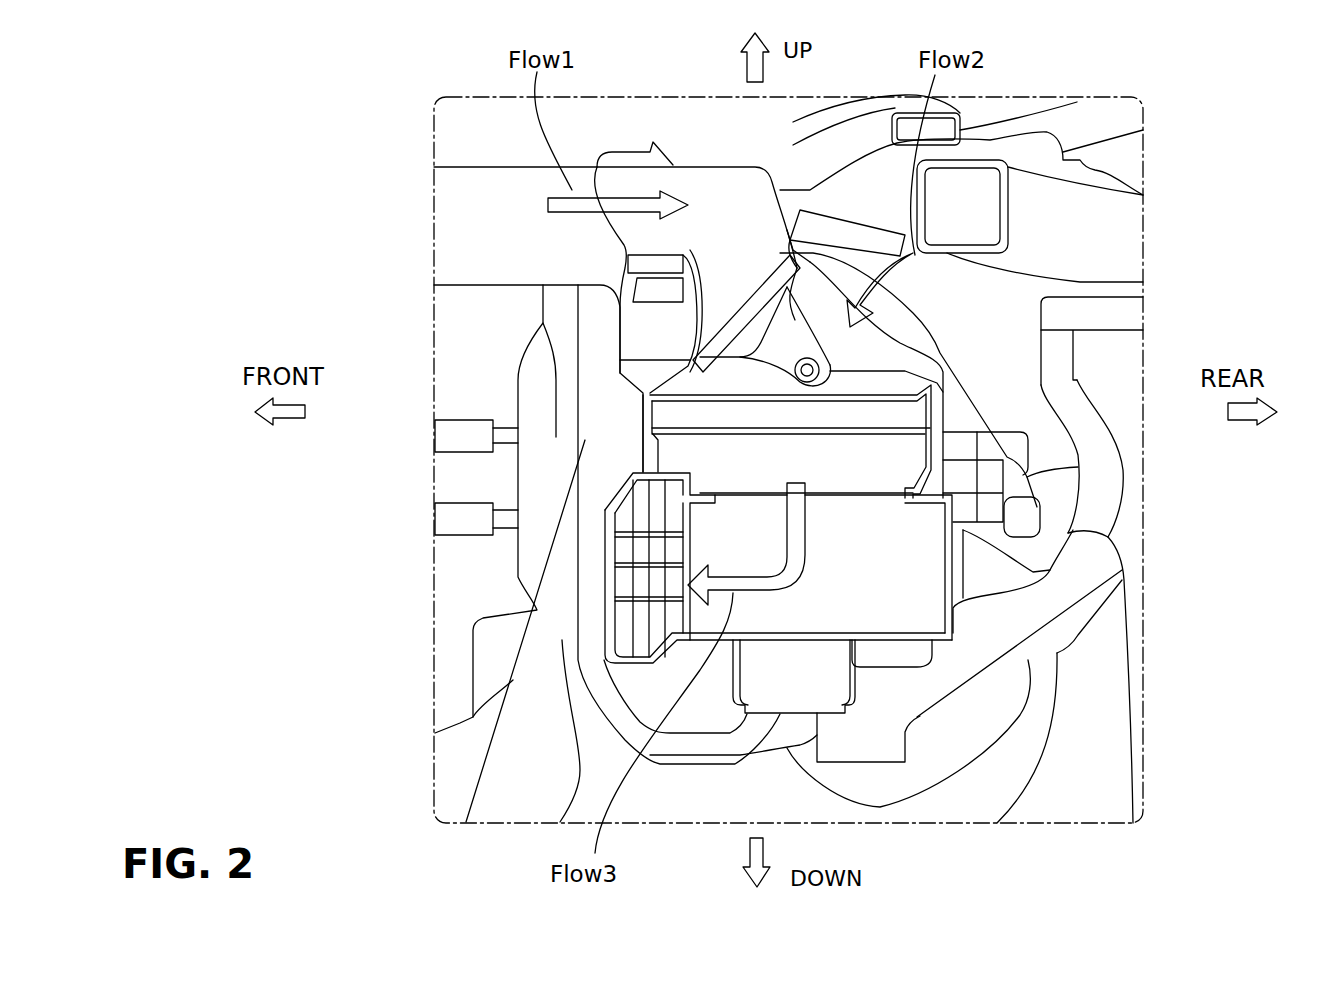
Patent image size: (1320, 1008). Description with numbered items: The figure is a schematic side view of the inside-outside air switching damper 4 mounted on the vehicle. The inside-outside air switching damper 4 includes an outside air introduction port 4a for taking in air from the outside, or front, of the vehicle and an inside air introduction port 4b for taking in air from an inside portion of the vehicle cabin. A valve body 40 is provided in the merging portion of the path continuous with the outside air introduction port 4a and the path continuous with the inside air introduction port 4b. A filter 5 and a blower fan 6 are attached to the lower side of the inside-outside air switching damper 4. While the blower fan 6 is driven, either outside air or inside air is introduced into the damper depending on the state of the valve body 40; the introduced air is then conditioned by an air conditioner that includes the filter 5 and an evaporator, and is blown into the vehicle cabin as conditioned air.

The inside-outside air switching damper 4 is at (1160, 315).
The outside air introduction port 4a is at (478, 206).
The inside air introduction port 4b is at (913, 318).
The valve body 40 is at (711, 325).
The filter 5 is at (677, 412).
The blower fan 6 is at (832, 683).